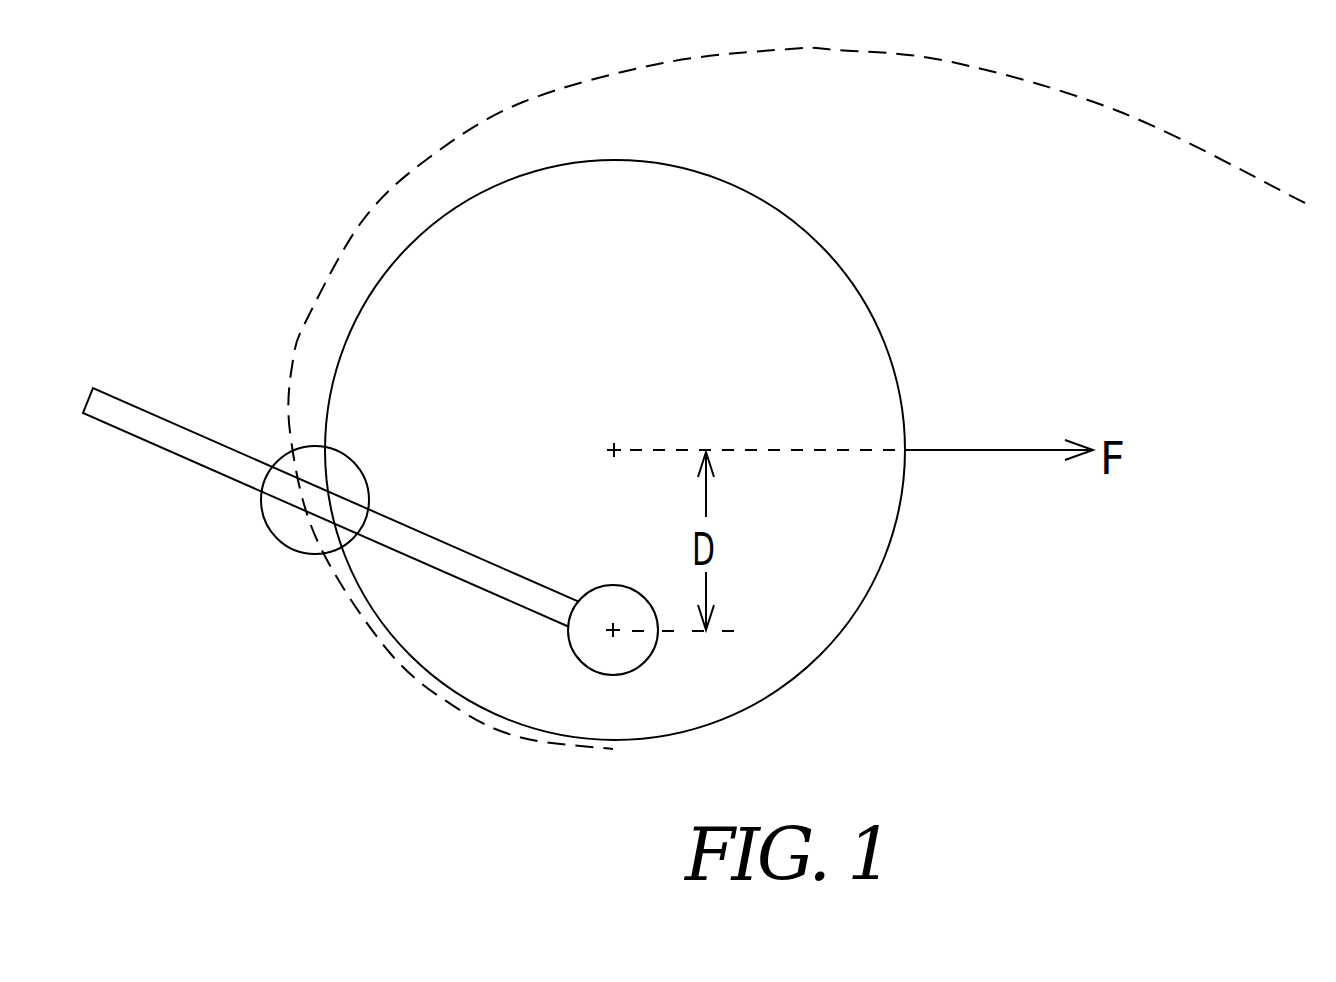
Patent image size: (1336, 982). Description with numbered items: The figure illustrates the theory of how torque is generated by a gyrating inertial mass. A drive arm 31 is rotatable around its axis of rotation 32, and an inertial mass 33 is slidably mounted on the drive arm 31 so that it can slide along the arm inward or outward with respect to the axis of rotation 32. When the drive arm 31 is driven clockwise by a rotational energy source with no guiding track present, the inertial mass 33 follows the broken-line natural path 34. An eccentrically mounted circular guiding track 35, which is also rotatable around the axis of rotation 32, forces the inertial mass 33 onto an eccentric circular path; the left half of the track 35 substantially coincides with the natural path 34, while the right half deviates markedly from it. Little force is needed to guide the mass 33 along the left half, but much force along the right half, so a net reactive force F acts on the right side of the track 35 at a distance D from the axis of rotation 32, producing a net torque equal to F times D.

The drive arm 31 is at (160, 455).
The axis of rotation 32 is at (618, 624).
The inertial mass 33 is at (273, 546).
The natural path 34 is at (778, 52).
The eccentrically mounted circular guiding track 35 is at (862, 289).